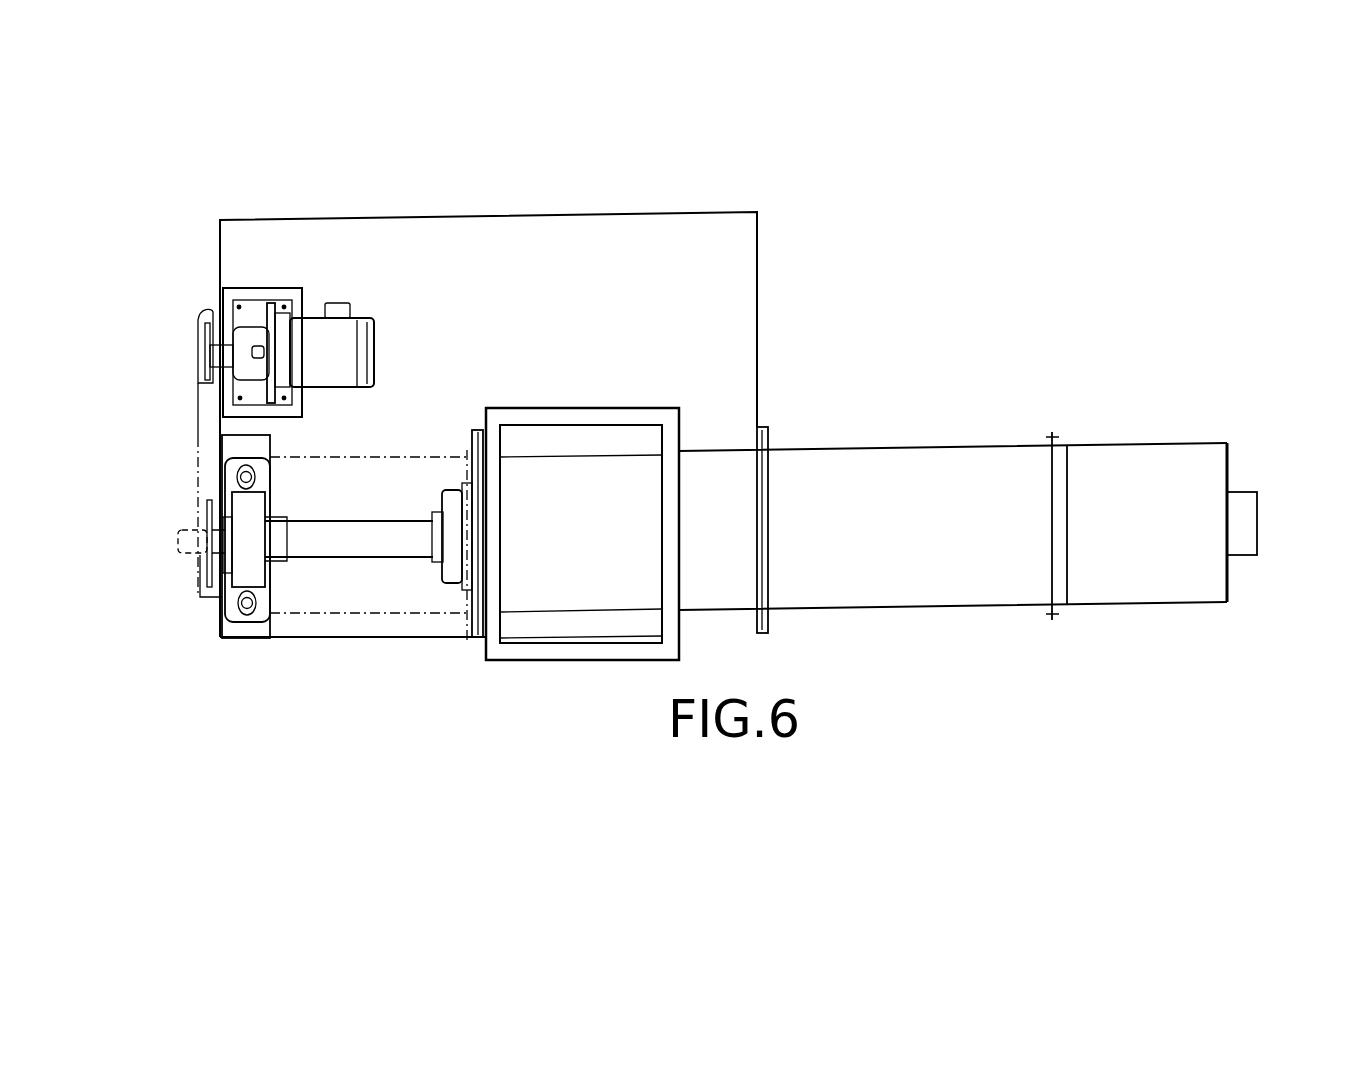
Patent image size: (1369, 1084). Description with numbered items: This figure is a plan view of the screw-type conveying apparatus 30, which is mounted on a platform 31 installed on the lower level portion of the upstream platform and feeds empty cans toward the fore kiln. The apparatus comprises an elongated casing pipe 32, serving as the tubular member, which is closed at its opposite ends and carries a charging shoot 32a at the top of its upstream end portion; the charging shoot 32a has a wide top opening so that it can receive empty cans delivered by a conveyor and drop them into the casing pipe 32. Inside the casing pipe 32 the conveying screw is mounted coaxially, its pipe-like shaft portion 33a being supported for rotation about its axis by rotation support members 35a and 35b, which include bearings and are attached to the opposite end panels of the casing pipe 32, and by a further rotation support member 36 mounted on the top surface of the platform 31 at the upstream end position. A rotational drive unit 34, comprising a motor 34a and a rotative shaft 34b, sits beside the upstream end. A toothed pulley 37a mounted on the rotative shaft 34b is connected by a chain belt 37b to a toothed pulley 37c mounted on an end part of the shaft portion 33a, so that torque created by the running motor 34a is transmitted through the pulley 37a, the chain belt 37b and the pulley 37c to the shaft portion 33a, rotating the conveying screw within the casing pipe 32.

The screw-type conveying apparatus 30 is at (956, 371).
The platform 31 is at (759, 283).
The casing pipe 32 is at (880, 447).
The charging shoot 32a is at (580, 408).
The shaft portion 33a is at (337, 520).
The rotational drive unit 34 is at (311, 326).
The motor 34a is at (376, 337).
The rotative shaft 34b is at (207, 308).
The rotation support member 35a is at (450, 488).
The rotation support member 35b is at (1258, 518).
The rotation support member 36 is at (250, 563).
The toothed pulley 37a is at (200, 350).
The chain belt 37b is at (198, 440).
The toothed pulley 37c is at (200, 568).